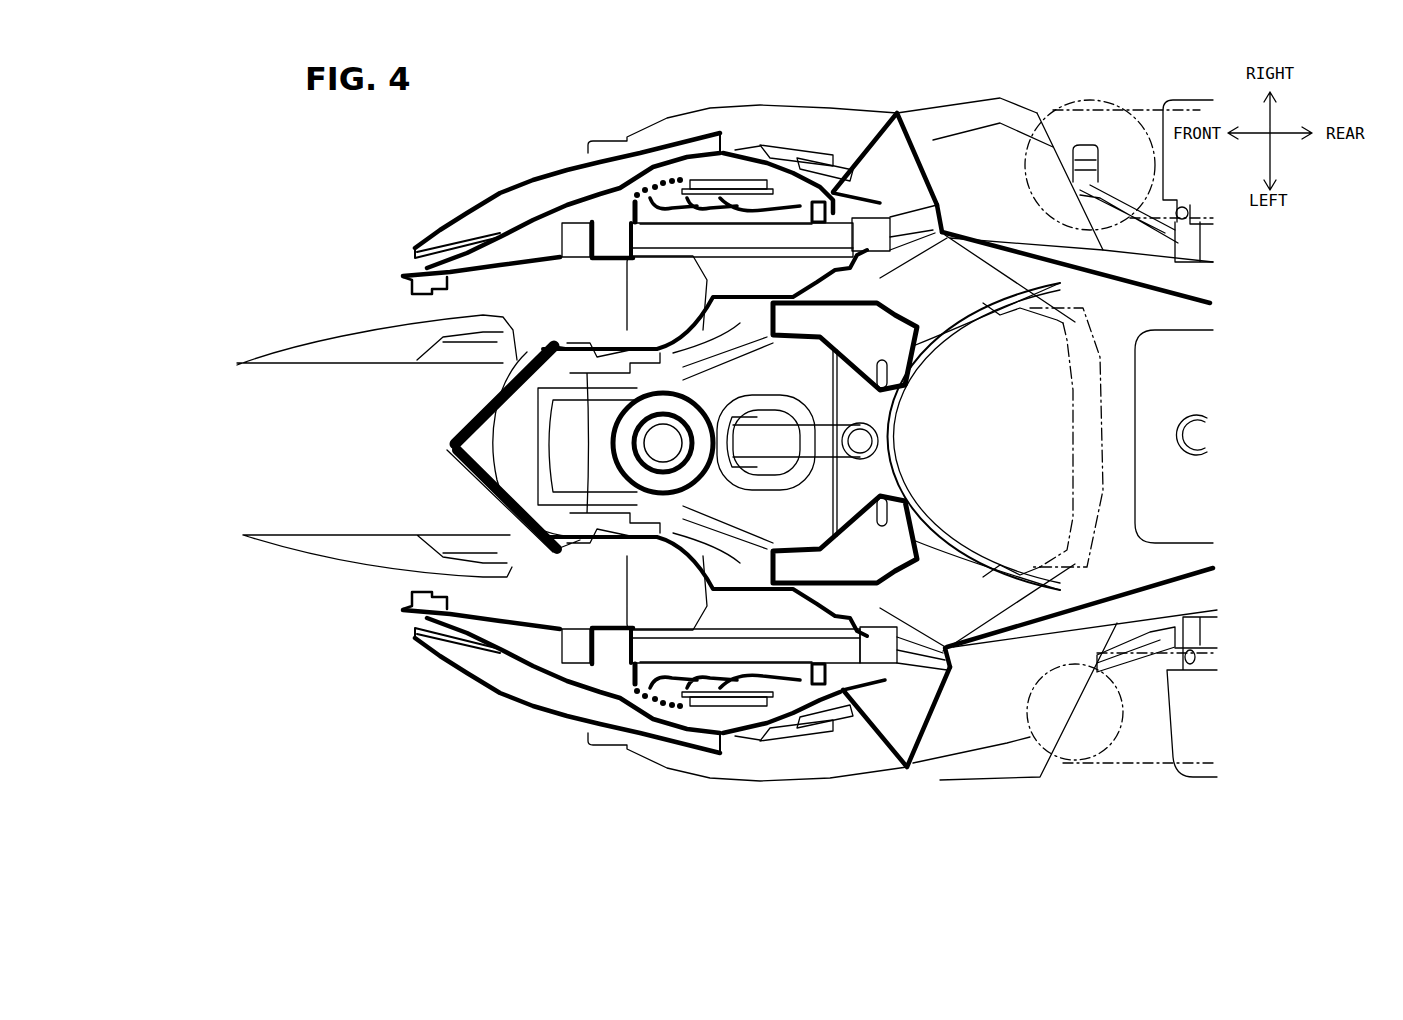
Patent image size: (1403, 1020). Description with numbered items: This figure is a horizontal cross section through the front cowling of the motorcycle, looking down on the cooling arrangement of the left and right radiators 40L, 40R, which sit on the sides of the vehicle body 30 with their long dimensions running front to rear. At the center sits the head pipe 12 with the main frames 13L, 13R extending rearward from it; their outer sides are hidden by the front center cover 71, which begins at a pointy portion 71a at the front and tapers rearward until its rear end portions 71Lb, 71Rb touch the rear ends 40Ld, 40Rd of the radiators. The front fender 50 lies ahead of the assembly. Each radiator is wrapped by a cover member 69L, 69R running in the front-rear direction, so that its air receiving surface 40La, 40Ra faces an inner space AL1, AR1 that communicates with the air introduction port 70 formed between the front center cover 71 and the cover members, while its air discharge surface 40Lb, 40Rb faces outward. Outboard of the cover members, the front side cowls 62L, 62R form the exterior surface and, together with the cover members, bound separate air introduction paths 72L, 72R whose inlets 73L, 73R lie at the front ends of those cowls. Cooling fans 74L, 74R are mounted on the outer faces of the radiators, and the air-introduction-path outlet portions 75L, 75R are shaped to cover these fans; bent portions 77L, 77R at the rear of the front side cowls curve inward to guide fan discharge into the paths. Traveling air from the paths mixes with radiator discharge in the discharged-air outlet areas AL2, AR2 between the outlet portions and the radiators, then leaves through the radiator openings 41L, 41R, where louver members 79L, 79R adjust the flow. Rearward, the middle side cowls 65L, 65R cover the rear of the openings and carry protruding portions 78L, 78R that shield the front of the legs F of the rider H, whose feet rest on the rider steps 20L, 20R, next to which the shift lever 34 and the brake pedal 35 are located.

The head pipe 12 is at (607, 467).
The right main frame 13R is at (923, 298).
The left main frame 13L is at (912, 573).
The right rider step 20R is at (1173, 105).
The left rider step 20L is at (1197, 740).
The vehicle body 30 is at (1122, 138).
The shift lever 34 is at (1130, 652).
The brake pedal 35 is at (1080, 148).
The right radiator 40R is at (842, 235).
The left radiator 40L is at (842, 651).
The air receiving surface 40Ra is at (795, 300).
The air receiving surface 40La is at (797, 584).
The air discharge surface 40Rb is at (783, 146).
The air discharge surface 40Lb is at (783, 740).
The rear end of right radiator 40Rd is at (877, 228).
The rear end of left radiator 40Ld is at (890, 664).
The right radiator opening 41R is at (745, 150).
The left radiator opening 41L is at (745, 736).
The front fender 50 is at (275, 470).
The right front side cowl 62R is at (453, 223).
The left front side cowl 62L is at (453, 663).
The right middle side cowl 65R is at (963, 153).
The left middle side cowl 65L is at (1023, 710).
The right cover member 69R is at (395, 281).
The left cover member 69L is at (395, 605).
The air introduction port 70 is at (430, 312).
The front center cover 71 is at (525, 345).
The pointy portion 71a is at (443, 444).
The rear end portion of front center cover 71Rb is at (865, 232).
The rear end portion of front center cover 71Lb is at (870, 654).
The right air introduction path 72R is at (553, 183).
The left air introduction path 72L is at (553, 703).
The inlet of right air introduction path 73R is at (405, 262).
The inlet of left air introduction path 73L is at (405, 624).
The right cooling fan 74R is at (698, 180).
The left cooling fan 74L is at (698, 706).
The air-introduction-path outlet portion 75R is at (647, 167).
The air-introduction-path outlet portion 75L is at (647, 719).
The bent portion 77R is at (735, 140).
The bent portion 77L is at (735, 746).
The protruding portion 78R is at (905, 112).
The protruding portion 78L is at (912, 772).
The right louver member 79R is at (800, 160).
The left louver member 79L is at (800, 726).
The space on inner side AR1 is at (740, 269).
The space on inner side AL1 is at (740, 617).
The discharged-air outlet area AR2 is at (712, 165).
The discharged-air outlet area AL2 is at (712, 721).
The legs of the rider F is at (1062, 110).
The rider H is at (1083, 110).